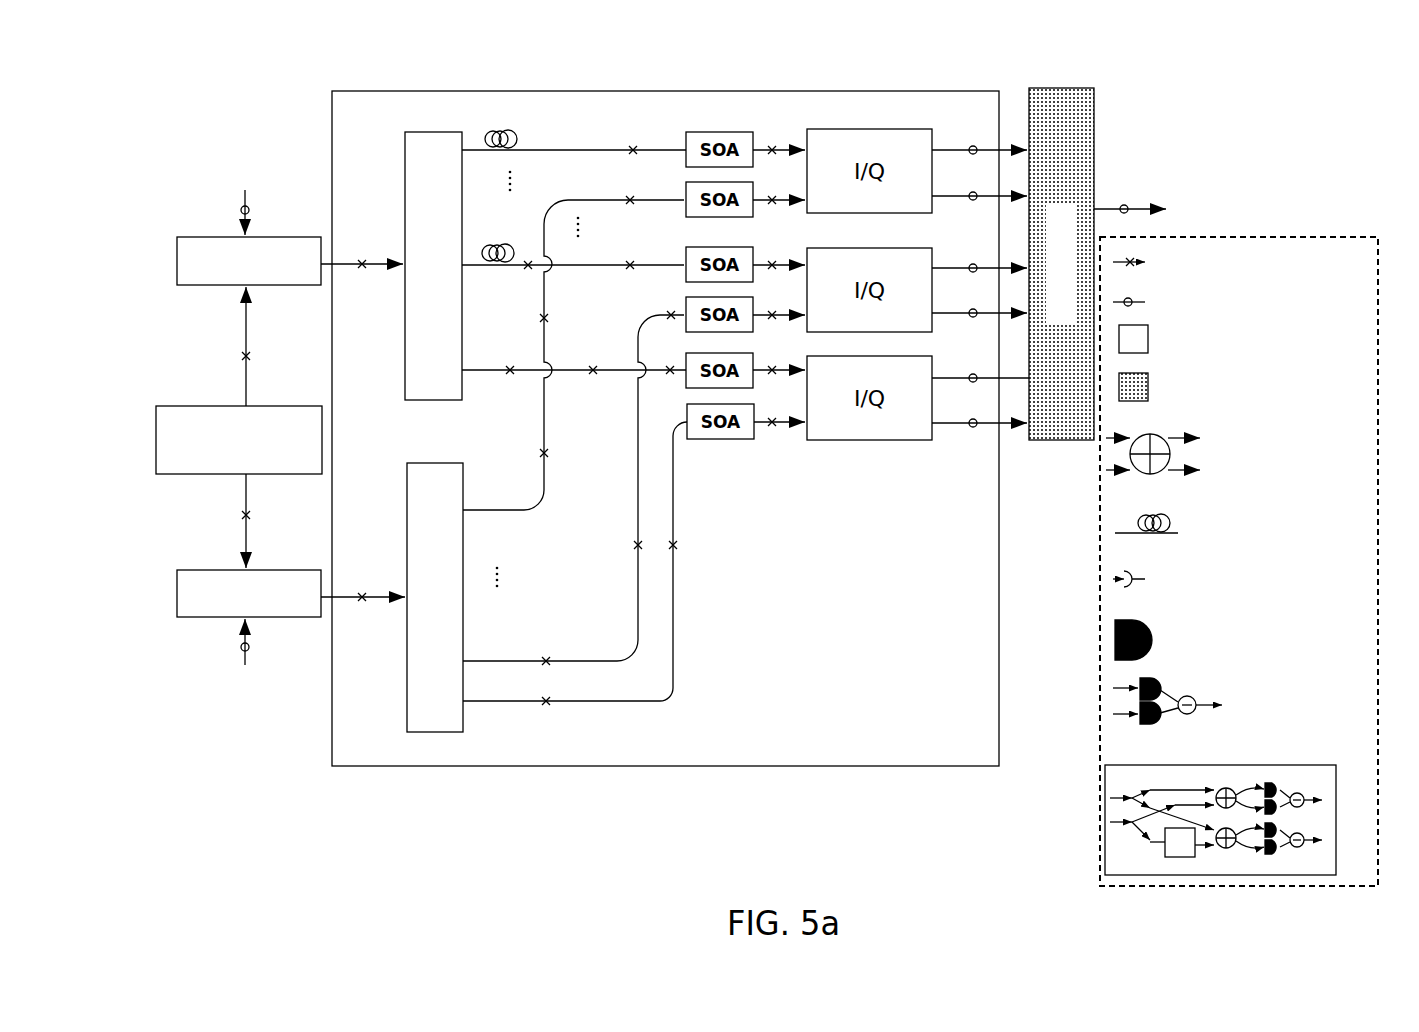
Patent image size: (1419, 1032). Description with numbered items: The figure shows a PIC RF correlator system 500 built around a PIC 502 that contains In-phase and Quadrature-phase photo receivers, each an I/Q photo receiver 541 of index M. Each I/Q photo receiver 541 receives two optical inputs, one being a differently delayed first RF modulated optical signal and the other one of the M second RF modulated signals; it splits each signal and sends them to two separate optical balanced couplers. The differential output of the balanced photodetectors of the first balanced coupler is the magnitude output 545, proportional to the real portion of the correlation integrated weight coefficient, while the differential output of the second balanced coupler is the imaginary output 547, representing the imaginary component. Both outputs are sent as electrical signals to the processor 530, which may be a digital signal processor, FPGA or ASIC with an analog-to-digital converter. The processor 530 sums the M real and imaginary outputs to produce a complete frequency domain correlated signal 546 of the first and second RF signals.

The PIC RF correlator system 500 is at (305, 62).
The PIC 502 is at (384, 91).
The processor 530 is at (1066, 88).
The I/Q photo receiver 541 is at (893, 126).
The magnitude output 545 is at (962, 150).
The complete frequency domain correlated signal 546 is at (1120, 207).
The imaginary output 547 is at (945, 200).